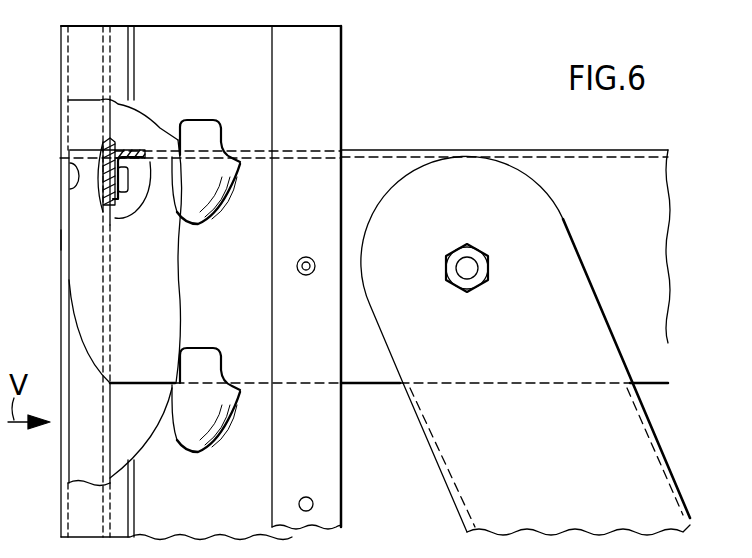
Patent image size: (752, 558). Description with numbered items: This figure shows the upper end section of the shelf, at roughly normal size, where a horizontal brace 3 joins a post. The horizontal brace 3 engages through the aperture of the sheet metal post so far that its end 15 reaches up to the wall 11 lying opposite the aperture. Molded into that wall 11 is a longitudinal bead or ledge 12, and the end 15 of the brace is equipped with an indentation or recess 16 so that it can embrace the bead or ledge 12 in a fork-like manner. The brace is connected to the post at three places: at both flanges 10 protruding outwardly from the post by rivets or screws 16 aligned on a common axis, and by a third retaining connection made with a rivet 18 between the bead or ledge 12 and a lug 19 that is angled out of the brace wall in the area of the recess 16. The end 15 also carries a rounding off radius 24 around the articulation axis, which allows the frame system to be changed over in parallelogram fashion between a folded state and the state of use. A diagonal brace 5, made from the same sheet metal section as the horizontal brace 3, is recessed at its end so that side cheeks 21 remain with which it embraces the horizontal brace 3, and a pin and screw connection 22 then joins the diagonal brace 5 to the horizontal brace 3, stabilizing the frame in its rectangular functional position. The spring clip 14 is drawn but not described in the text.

The horizontal brace 3 is at (648, 222).
The diagonal brace 5 is at (634, 470).
The flange 10 is at (317, 492).
The wall 11 is at (62, 238).
The longitudinal bead or ledge 12 is at (100, 218).
The spring clip 14 is at (197, 128).
The end of horizontal brace 15 is at (72, 171).
The indentation or recess 16 is at (305, 256).
The rivet 18 is at (104, 144).
The lug 19 is at (122, 192).
The side cheek 21 is at (490, 184).
The pin and screw connection 22 is at (471, 260).
The rounding off radius 24 is at (80, 338).